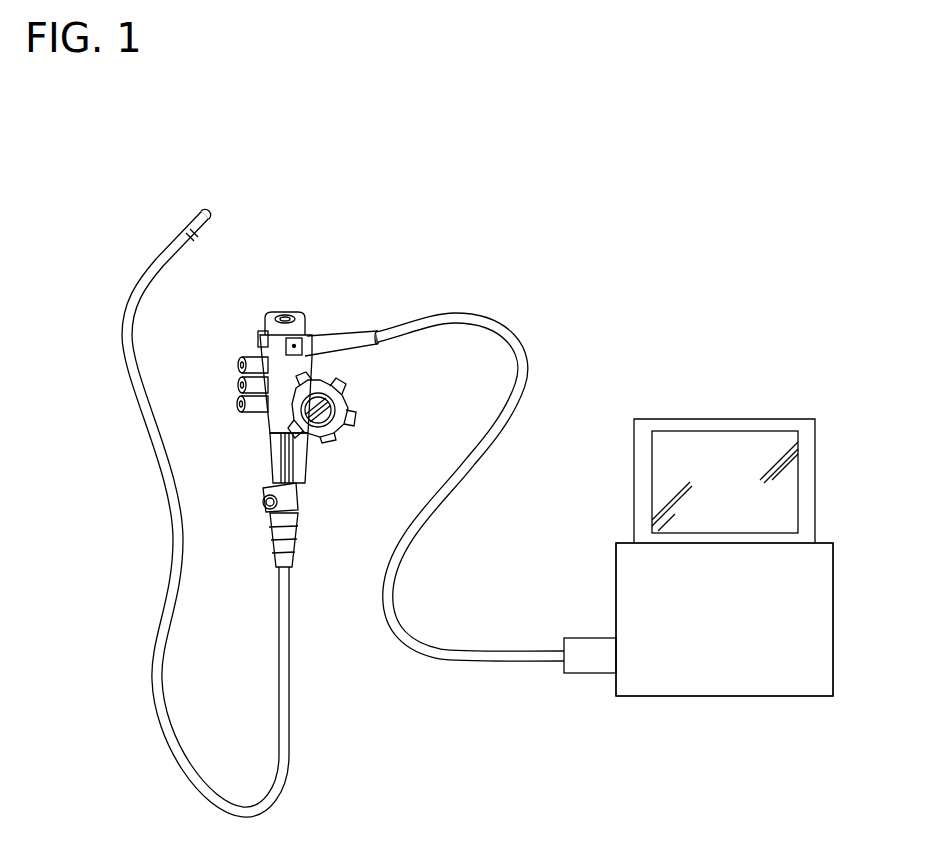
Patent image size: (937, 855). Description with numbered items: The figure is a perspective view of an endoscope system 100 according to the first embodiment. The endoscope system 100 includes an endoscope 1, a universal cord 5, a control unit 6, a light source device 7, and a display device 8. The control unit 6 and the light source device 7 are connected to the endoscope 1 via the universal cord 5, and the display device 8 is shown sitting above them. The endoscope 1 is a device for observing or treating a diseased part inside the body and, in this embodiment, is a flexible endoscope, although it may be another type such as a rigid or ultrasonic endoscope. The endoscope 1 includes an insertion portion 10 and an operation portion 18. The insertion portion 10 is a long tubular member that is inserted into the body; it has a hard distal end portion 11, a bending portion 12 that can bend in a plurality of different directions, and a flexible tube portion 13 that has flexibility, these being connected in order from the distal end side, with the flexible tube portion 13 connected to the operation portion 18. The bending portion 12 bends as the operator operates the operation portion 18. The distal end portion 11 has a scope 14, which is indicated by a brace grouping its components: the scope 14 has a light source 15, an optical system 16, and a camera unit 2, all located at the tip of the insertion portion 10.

The endoscope 1 is at (415, 202).
The endoscope system 100 is at (683, 140).
The insertion portion 10 is at (74, 170).
The distal end portion 11 is at (170, 221).
The bending portion 12 is at (135, 273).
The flexible tube portion 13 is at (135, 435).
The scope 14 is at (287, 131).
The light source 15 is at (205, 213).
The optical system 16 is at (206, 213).
The camera unit 2 is at (209, 212).
The operation portion 18 is at (290, 303).
The universal cord 5 is at (455, 318).
The control unit 6 is at (617, 597).
The light source device 7 is at (724, 619).
The display device 8 is at (724, 419).